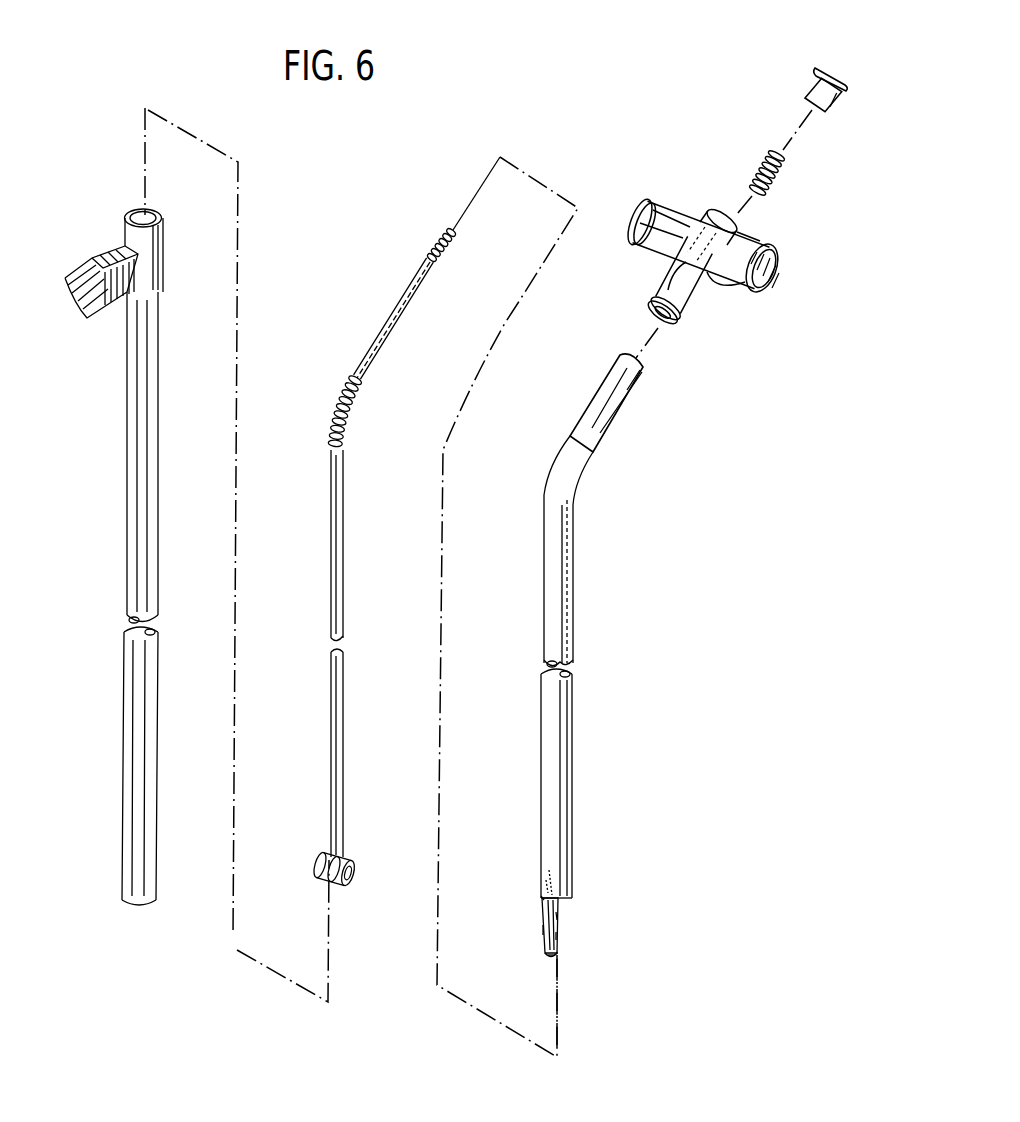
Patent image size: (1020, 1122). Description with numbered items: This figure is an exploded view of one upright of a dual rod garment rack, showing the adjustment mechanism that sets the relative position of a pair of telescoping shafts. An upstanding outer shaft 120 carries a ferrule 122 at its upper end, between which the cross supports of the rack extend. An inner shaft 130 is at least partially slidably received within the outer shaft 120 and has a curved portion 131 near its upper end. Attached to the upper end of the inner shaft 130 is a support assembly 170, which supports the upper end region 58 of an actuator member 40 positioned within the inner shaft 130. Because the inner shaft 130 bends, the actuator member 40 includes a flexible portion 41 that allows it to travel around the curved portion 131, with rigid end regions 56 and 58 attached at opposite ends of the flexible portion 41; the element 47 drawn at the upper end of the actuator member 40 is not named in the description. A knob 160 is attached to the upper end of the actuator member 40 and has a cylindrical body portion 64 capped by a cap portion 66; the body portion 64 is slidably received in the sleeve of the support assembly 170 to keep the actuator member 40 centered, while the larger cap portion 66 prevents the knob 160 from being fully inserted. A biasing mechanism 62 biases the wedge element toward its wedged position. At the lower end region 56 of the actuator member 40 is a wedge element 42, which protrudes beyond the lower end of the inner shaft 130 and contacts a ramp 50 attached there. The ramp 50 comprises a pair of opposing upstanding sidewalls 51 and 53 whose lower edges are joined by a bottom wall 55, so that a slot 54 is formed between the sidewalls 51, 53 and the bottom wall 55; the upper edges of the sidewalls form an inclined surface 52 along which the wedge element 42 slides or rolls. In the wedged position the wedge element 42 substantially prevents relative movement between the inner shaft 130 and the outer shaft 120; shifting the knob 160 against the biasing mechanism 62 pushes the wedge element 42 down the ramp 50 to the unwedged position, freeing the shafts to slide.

The upstanding outer shaft 120 is at (125, 398).
The ferrule 122 is at (128, 233).
The threaded tip 47 is at (436, 245).
The end region of actuator member 58 is at (393, 340).
The flexible portion 41 is at (348, 418).
The end region of actuator member 56 is at (343, 600).
The actuator member 40 is at (345, 728).
The wedge element 42 is at (362, 868).
The curved portion of inner shaft 131 is at (545, 470).
The inner shaft 130 is at (577, 543).
The support assembly 170 is at (700, 320).
The biasing mechanism 62 is at (760, 158).
The knob 160 is at (851, 95).
The cylindrical body portion 64 is at (836, 100).
The cap portion 66 is at (848, 83).
The ramp 50 is at (574, 904).
The sidewall 51 is at (541, 930).
The inclined surface 52 is at (565, 915).
The sidewall 53 is at (560, 935).
The slot 54 is at (556, 958).
The bottom wall 55 is at (540, 900).